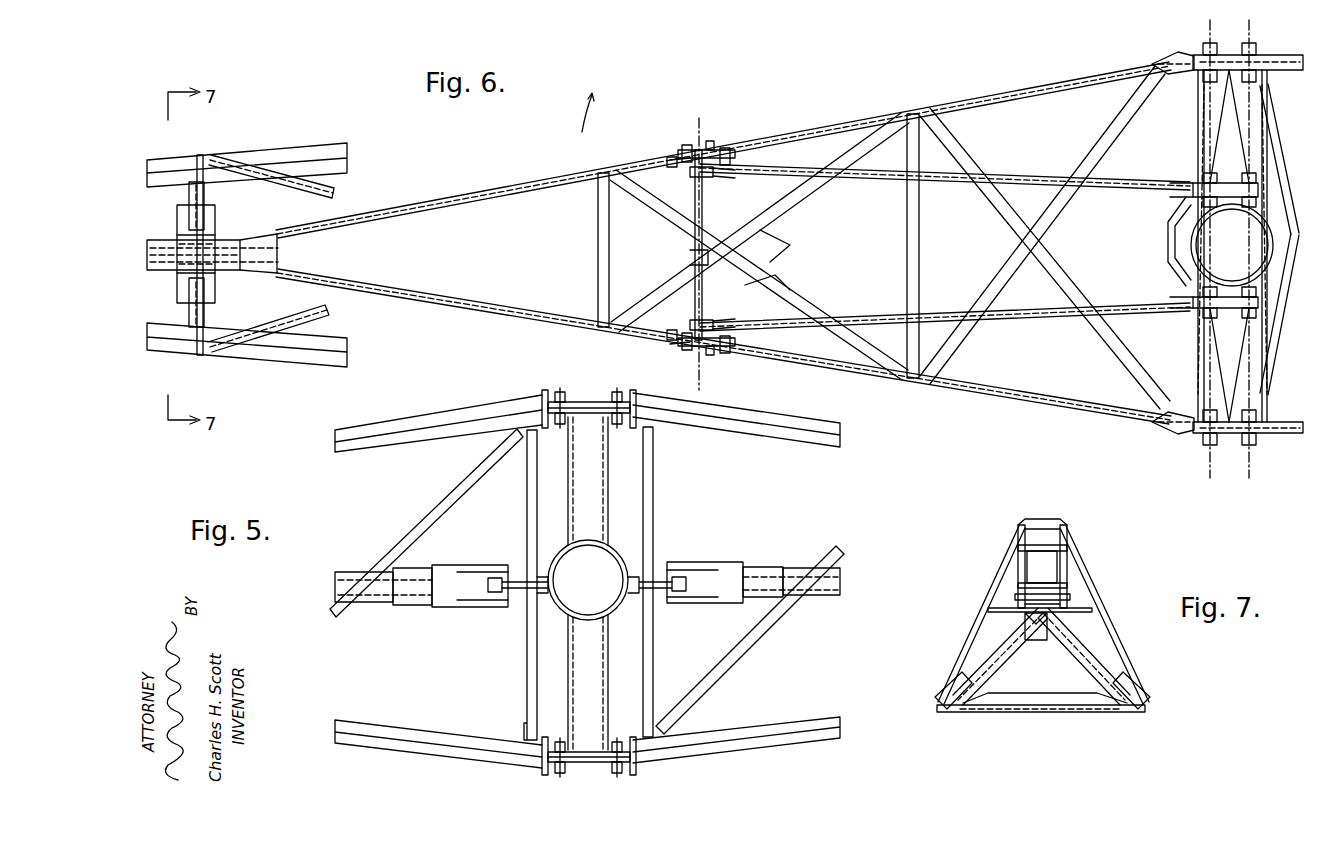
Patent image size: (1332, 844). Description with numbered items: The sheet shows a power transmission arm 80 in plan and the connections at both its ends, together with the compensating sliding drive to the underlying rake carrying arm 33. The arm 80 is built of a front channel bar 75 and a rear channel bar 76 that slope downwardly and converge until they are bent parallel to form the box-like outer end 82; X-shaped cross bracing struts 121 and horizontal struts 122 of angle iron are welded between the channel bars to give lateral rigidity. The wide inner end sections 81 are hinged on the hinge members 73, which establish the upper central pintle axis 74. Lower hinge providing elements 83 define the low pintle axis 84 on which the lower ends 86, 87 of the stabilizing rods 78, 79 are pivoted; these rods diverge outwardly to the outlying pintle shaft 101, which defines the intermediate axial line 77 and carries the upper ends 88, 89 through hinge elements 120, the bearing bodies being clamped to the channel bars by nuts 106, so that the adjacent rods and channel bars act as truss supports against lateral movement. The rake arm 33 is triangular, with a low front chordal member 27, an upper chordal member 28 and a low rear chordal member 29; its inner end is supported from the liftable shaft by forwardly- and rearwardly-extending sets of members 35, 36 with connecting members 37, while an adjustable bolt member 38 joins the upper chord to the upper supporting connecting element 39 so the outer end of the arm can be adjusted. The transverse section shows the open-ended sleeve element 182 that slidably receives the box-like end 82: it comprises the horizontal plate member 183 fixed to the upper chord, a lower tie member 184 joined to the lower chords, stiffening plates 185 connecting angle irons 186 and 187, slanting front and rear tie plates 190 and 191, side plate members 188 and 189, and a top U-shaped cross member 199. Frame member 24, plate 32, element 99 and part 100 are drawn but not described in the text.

In FIG. 5, the frame side member 24 is at (523, 518).
In FIG. 6, the low front chordal member 27 is at (300, 148).
In FIG. 5, the low front chordal member 27 is at (352, 453).
In FIG. 7, the low front chordal member 27 is at (960, 712).
In FIG. 5, the upper chordal member 28 is at (588, 587).
In FIG. 7, the upper chordal member 28 is at (1039, 638).
In FIG. 6, the low rear chordal member 29 is at (297, 363).
In FIG. 5, the low rear chordal member 29 is at (360, 720).
In FIG. 7, the low rear chordal member 29 is at (1125, 712).
In FIG. 5, the column assembly 32 is at (577, 575).
In FIG. 6, the rake carrying arm 33 is at (306, 104).
In FIG. 5, the rake carrying arm 33 is at (880, 568).
In FIG. 5, the forwardly-extending set of members 35 is at (578, 493).
In FIG. 5, the rearwardly-extending set of members 36 is at (598, 496).
In FIG. 5, the connecting members 37 is at (587, 400).
In FIG. 5, the adjustable bolt member 38 is at (490, 578).
In FIG. 5, the upper supporting connecting element 39 is at (527, 598).
In FIG. 6, the hinge members 73 is at (1231, 249).
In FIG. 6, the upper central pintle axis 74 is at (1270, 470).
In FIG. 6, the front channel bar 75 is at (466, 207).
In FIG. 6, the rear channel bar 76 is at (466, 292).
In FIG. 6, the outlying pintle axial line 77 is at (697, 132).
In FIG. 6, the stabilizing rod 78 is at (1023, 173).
In FIG. 6, the stabilizing rod 79 is at (1027, 317).
In FIG. 6, the power transmission arm 80 is at (670, 247).
In FIG. 6, the inner end sections 81 is at (1136, 72).
In FIG. 6, the outer end 82 is at (220, 238).
In FIG. 6, the hinge providing elements 83 is at (1195, 175).
In FIG. 6, the low pintle axis 84 is at (1252, 262).
In FIG. 6, the lower end of stabilizing rod 86 is at (1173, 197).
In FIG. 6, the lower end of stabilizing rod 87 is at (1167, 294).
In FIG. 6, the upper outer end of stabilizing rod 88 is at (722, 178).
In FIG. 6, the upper outer end of stabilizing rod 89 is at (717, 320).
In FIG. 7, the hub channel 99 is at (1020, 560).
In FIG. 6, the nut 100 is at (688, 169).
In FIG. 6, the outlying pintle shaft 101 is at (692, 257).
In FIG. 6, the nuts 106 is at (705, 142).
In FIG. 6, the hinge elements 120 is at (708, 180).
In FIG. 6, the X-shaped cross bracing struts 121 is at (1000, 261).
In FIG. 6, the horizontal struts 122 is at (597, 223).
In FIG. 6, the open-ended sleeve element 182 is at (173, 279).
In FIG. 7, the open-ended sleeve element 182 is at (1054, 619).
In FIG. 6, the plate member 183 is at (173, 227).
In FIG. 7, the plate member 183 is at (1090, 608).
In FIG. 7, the tie member 184 is at (1040, 712).
In FIG. 7, the stiffening plates 185 is at (1085, 640).
In FIG. 7, the angle iron 186 is at (950, 683).
In FIG. 7, the angle iron 187 is at (1135, 683).
In FIG. 7, the side plate member 188 is at (1008, 587).
In FIG. 7, the side plate member 189 is at (1073, 583).
In FIG. 7, the front tie plate 190 is at (982, 623).
In FIG. 7, the rear tie plate 191 is at (1103, 625).
In FIG. 7, the top U-shaped cross member 199 is at (1043, 523).